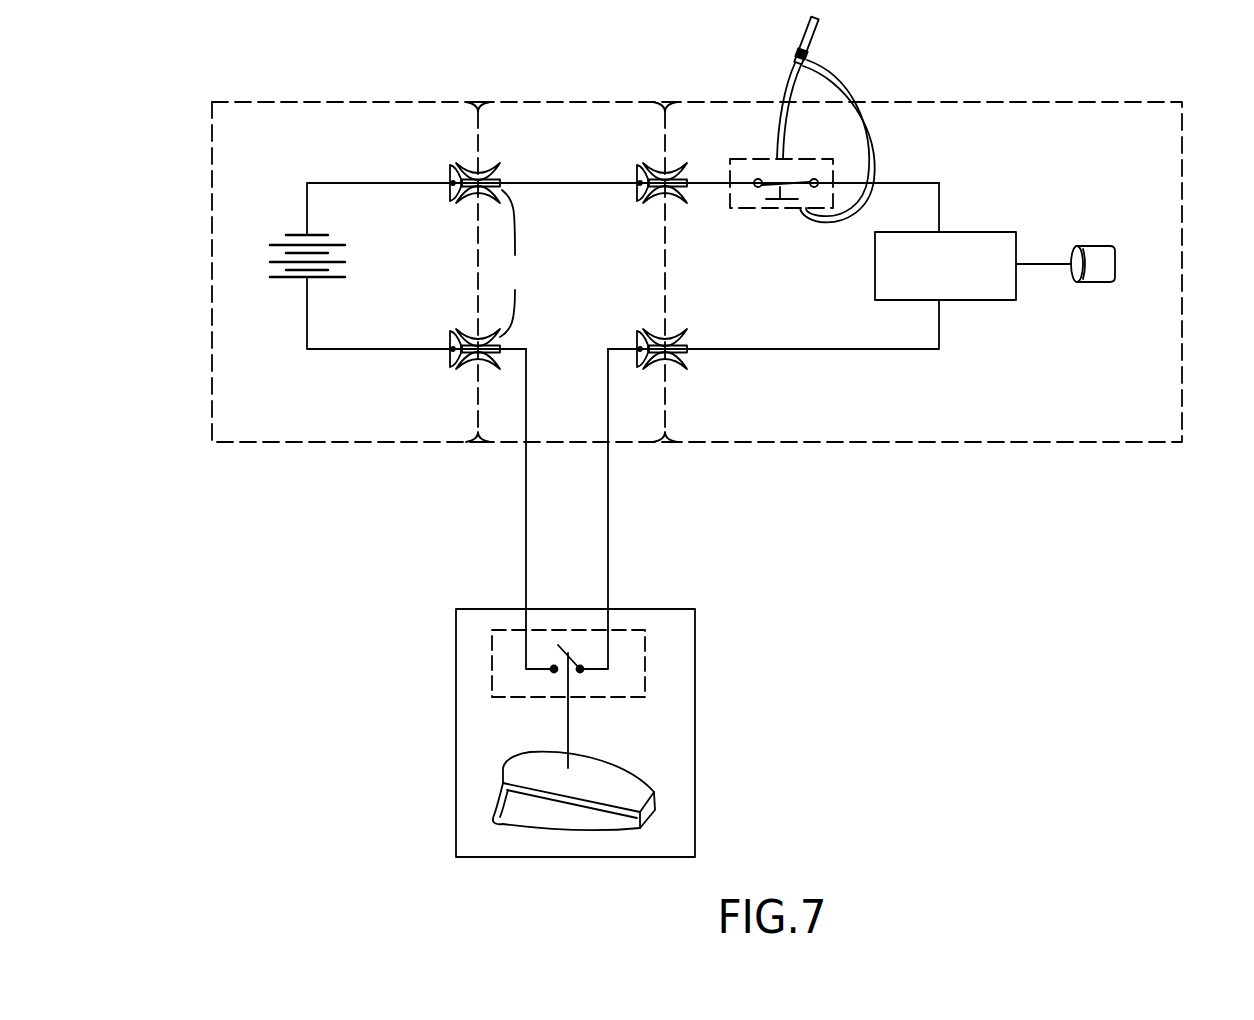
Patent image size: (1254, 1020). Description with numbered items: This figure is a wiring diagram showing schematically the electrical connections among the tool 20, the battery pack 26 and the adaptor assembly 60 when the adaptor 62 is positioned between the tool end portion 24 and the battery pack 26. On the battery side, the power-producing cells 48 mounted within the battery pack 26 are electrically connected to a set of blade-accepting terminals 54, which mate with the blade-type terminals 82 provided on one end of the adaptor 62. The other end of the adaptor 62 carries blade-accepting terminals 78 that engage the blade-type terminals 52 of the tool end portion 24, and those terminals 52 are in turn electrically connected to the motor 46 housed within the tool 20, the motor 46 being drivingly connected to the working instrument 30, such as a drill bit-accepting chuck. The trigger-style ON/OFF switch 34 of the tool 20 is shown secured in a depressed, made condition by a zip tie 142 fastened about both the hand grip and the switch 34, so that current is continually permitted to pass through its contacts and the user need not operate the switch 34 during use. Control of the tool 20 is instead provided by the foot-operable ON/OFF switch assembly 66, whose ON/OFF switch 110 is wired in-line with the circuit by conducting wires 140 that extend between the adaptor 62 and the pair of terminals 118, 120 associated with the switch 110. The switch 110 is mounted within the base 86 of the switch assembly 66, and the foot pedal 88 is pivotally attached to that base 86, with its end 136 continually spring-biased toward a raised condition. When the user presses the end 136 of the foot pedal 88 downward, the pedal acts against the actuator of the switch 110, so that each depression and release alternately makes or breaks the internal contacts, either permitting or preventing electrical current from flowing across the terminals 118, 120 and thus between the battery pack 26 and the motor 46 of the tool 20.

The tool 20 is at (1035, 102).
The tool end portion 24 is at (665, 102).
The battery pack 26 is at (227, 100).
The working instrument 30 is at (1107, 281).
The trigger-style ON/OFF switch 34 is at (752, 157).
The motor 46 is at (980, 300).
The power-producing cells 48 is at (295, 278).
The blade-type terminals 52 is at (683, 191).
The blade-accepting terminals 54 is at (462, 327).
The adaptor assembly 60 is at (516, 78).
The adaptor 62 is at (340, 100).
The foot-operable ON/OFF switch assembly 66 is at (696, 744).
The blade-accepting terminals 78 is at (645, 327).
The blade-type terminals 82 is at (509, 263).
The base 86 is at (581, 821).
The foot pedal 88 is at (614, 793).
The ON/OFF switch 110 is at (645, 637).
The terminal 118 is at (551, 671).
The terminal 120 is at (583, 672).
The end of foot pedal 136 is at (515, 769).
The conducting wires 140 is at (608, 521).
The zip tie 142 is at (797, 53).